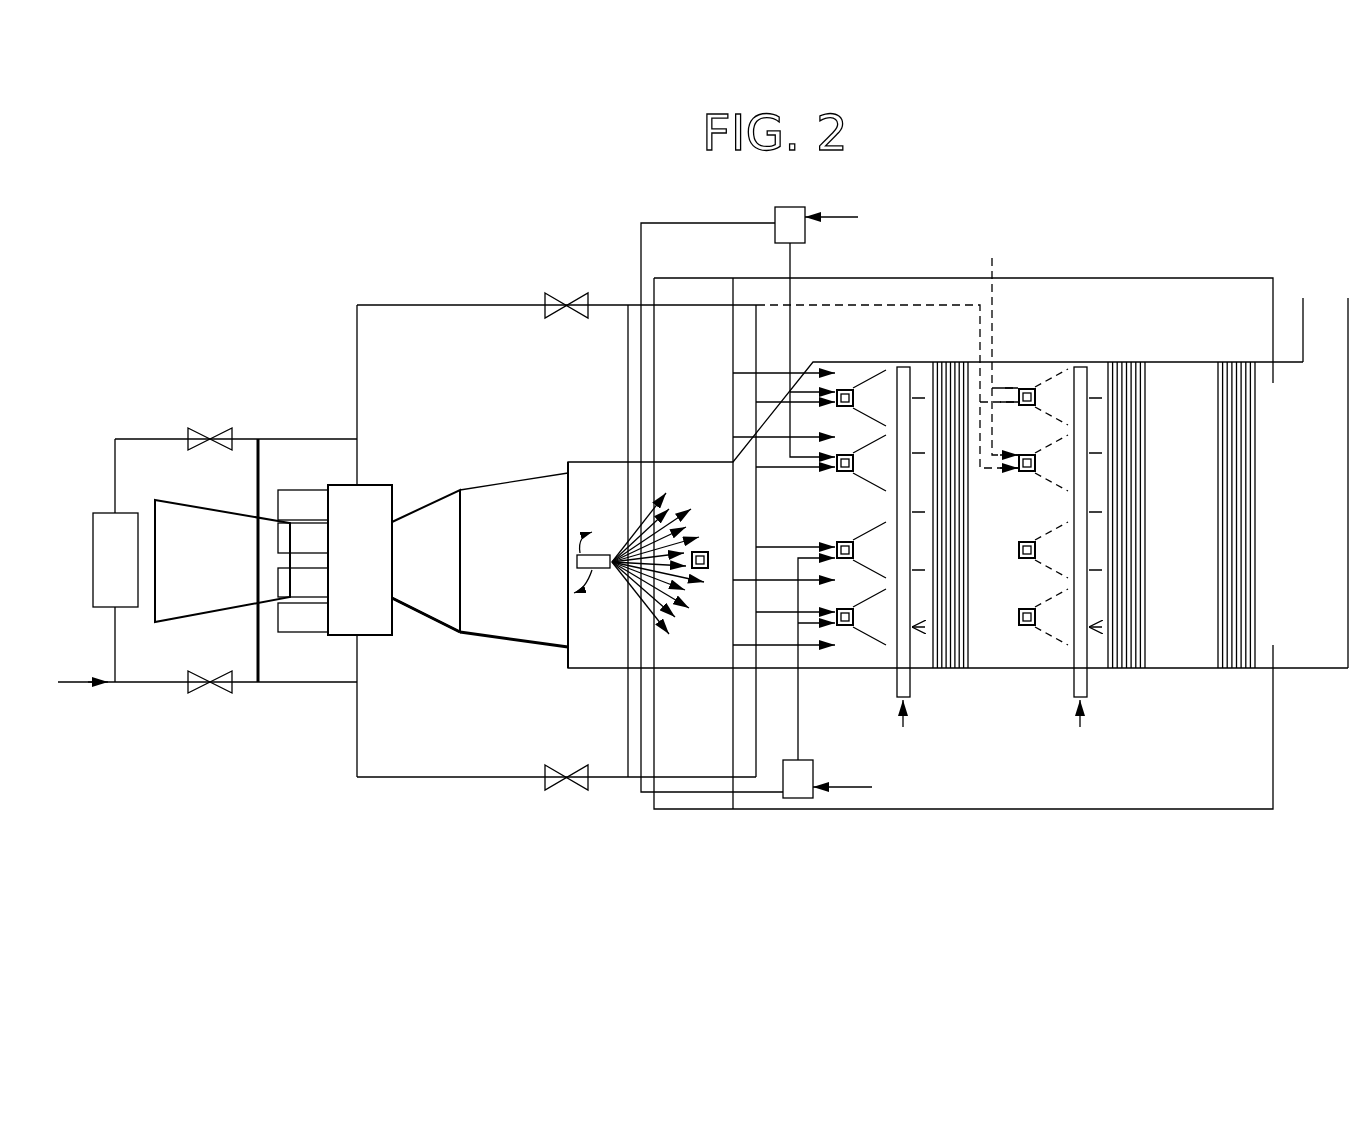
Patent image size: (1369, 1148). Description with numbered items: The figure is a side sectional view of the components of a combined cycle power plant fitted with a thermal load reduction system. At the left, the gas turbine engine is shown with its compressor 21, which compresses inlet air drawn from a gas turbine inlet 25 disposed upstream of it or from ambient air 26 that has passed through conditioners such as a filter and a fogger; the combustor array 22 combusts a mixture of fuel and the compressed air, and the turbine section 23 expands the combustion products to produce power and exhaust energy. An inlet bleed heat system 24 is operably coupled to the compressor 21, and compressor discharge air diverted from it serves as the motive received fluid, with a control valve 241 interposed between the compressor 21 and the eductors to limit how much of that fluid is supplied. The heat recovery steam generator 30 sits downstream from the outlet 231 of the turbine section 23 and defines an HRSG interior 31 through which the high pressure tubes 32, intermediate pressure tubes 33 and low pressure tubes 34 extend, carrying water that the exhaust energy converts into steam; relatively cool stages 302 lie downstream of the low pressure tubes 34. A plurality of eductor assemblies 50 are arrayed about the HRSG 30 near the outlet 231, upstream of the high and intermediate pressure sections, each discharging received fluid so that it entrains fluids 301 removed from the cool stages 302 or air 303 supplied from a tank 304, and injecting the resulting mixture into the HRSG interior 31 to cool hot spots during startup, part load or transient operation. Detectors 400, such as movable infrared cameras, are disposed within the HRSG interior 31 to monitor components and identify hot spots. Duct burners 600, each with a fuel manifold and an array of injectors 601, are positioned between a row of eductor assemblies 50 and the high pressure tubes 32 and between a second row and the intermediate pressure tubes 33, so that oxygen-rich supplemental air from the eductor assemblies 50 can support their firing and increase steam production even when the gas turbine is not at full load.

The compressor 21 is at (190, 575).
The combustor array 22 is at (368, 635).
The turbine section 23 is at (500, 637).
The outlet 231 is at (563, 657).
The inlet bleed heat system 24 is at (305, 439).
The control valve 241 is at (553, 790).
The gas turbine inlet 25 is at (101, 575).
The ambient air 26 is at (83, 683).
The heat recovery steam generator (HRSG) 30 is at (1027, 682).
The entrained fluids 301 is at (1152, 278).
The relatively cool stages 302 is at (1278, 613).
The entrained air 303 is at (858, 217).
The tank 304 is at (807, 238).
The HRSG interior 31 is at (582, 638).
The high pressure tubes 32 is at (965, 668).
The intermediate pressure tubes 33 is at (1122, 668).
The low pressure tubes 34 is at (1228, 668).
The detector 400 is at (577, 560).
The eductor assembly 50 is at (833, 407).
The duct burner 600 is at (903, 367).
The injectors 601 is at (1092, 453).